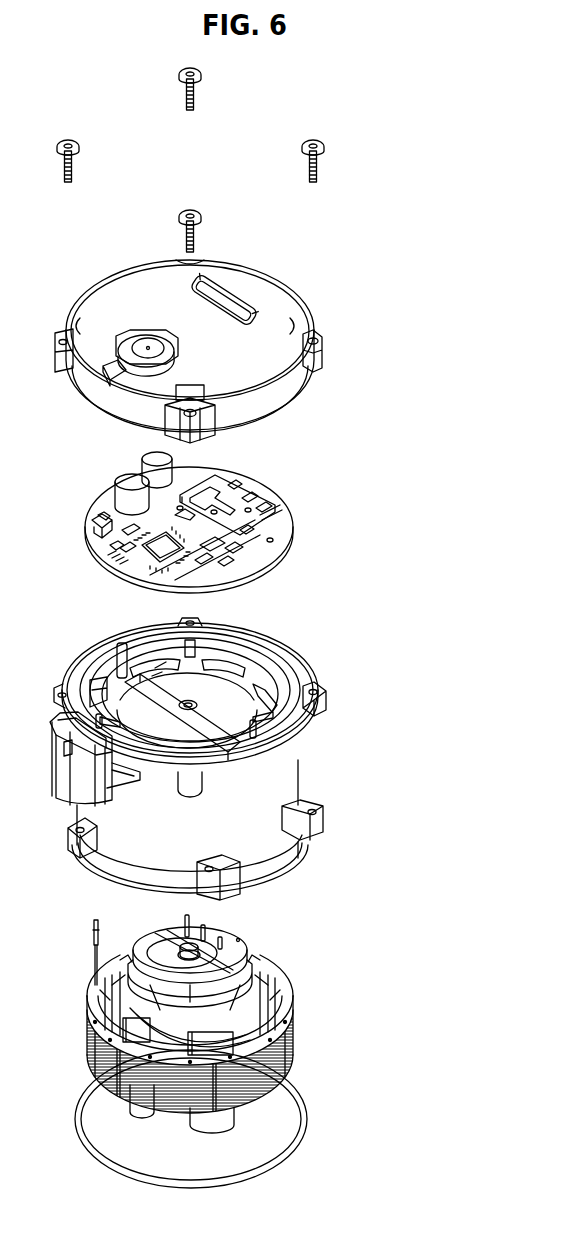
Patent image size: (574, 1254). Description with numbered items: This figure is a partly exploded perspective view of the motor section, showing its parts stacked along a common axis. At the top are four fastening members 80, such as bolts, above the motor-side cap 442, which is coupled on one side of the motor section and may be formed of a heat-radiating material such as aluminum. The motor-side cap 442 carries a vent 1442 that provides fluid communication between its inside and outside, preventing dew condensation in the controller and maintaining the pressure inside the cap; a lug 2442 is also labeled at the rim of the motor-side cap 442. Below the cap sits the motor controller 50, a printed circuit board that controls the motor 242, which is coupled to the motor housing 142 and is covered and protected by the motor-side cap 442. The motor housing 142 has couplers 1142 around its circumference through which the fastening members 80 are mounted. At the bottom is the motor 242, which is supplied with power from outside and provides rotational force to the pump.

The fastening members 80 is at (318, 162).
The motor-side cap 442 is at (210, 308).
The vent 1442 is at (147, 348).
The mounting lug of cover 2442 is at (313, 340).
The motor controller 50 is at (280, 523).
The motor housing 142 is at (252, 756).
The couplers 1142 is at (313, 692).
The motor 242 is at (331, 1044).